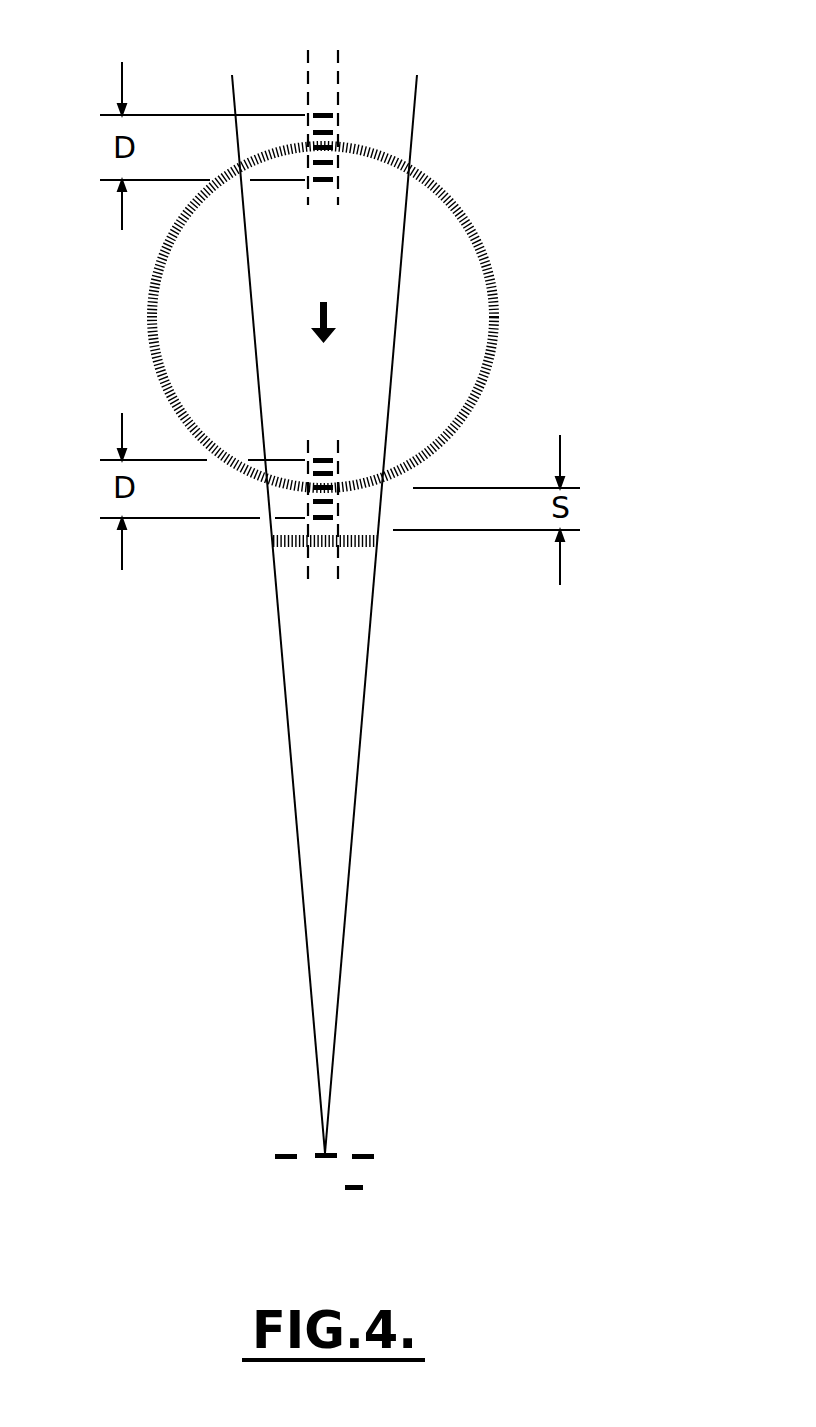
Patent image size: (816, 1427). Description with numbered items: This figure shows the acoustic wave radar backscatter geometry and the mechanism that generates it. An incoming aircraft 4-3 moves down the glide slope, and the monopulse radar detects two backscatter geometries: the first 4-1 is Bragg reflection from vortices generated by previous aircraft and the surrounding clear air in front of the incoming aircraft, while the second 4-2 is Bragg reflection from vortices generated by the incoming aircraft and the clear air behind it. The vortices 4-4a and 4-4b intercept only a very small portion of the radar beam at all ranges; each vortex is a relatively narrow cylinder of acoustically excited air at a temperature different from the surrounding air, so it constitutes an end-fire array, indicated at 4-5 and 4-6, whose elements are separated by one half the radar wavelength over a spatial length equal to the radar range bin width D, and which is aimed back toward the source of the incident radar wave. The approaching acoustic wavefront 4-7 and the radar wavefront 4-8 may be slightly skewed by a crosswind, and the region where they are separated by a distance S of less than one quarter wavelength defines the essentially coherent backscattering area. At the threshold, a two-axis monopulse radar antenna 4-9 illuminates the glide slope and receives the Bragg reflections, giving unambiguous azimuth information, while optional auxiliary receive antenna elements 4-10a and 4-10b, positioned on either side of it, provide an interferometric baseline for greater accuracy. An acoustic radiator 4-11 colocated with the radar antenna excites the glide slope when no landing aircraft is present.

The first backscatter geometry 4-1 is at (364, 433).
The second backscatter geometry 4-2 is at (330, 228).
The incoming aircraft 4-3 is at (333, 317).
The vortex 4-4a is at (308, 583).
The vortex 4-4b is at (340, 50).
The end-fire array 4-5 is at (322, 114).
The end-fire array 4-6 is at (320, 459).
The acoustic wavefront 4-7 is at (150, 318).
The radar wavefront 4-8 is at (290, 548).
The monopulse radar antenna 4-9 is at (322, 1150).
The auxiliary receive antenna element 4-10a is at (275, 1157).
The auxiliary receive antenna element 4-10b is at (367, 1152).
The acoustic radiator 4-11 is at (363, 1187).